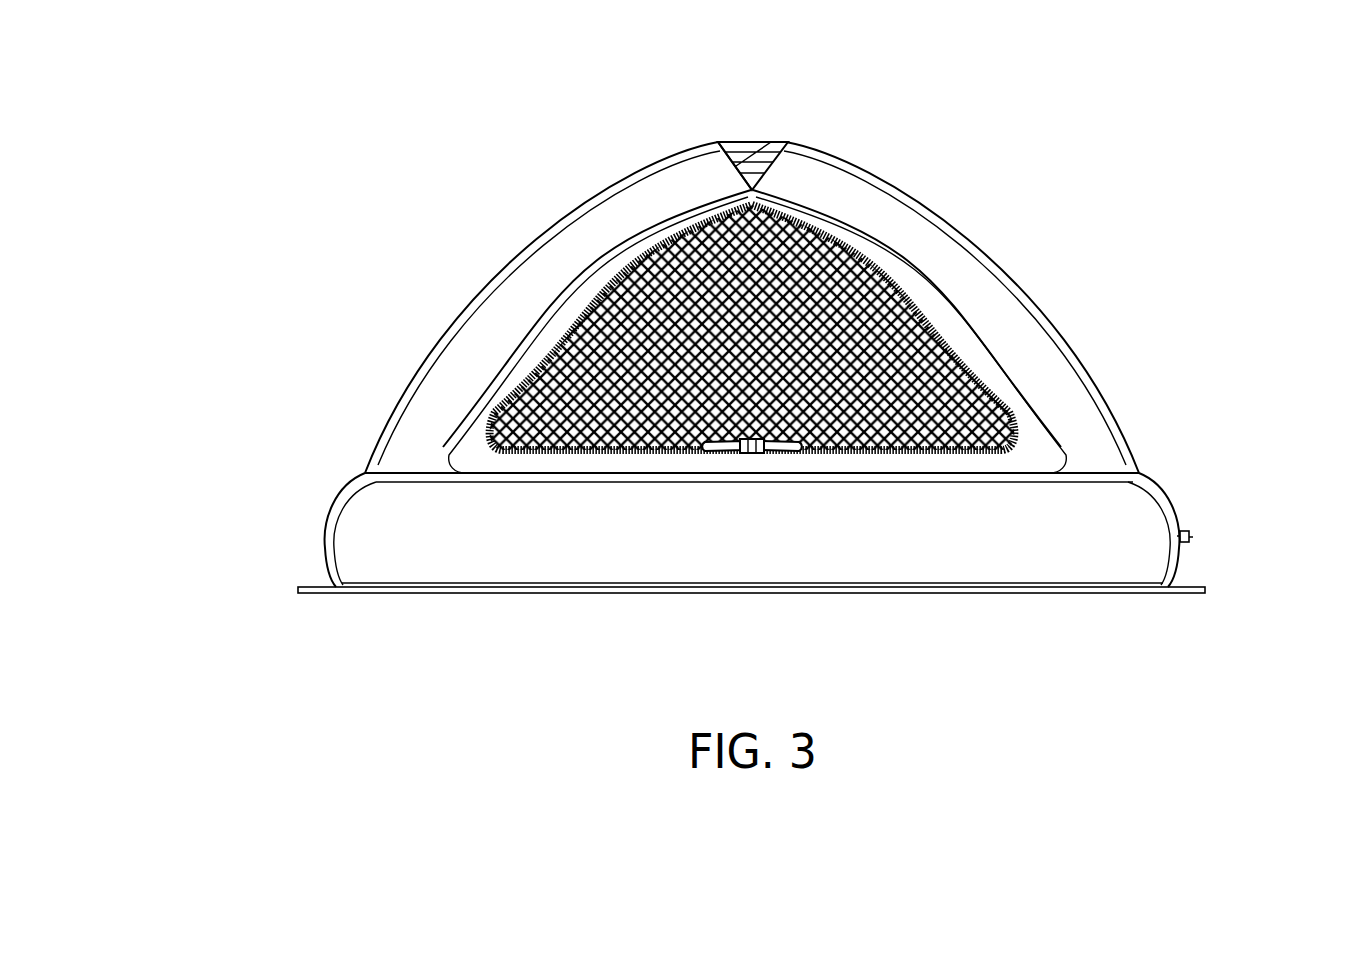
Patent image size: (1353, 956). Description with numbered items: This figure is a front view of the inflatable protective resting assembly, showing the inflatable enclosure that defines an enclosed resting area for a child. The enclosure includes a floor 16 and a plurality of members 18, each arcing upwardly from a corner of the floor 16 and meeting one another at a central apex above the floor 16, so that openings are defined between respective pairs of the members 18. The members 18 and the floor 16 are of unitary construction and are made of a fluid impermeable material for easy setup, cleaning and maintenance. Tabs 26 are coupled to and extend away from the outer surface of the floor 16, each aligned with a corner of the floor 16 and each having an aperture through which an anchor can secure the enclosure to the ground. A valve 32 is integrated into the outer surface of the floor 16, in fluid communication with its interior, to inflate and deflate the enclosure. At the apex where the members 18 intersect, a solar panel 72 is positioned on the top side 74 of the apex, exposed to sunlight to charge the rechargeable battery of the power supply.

The floor 16 is at (990, 473).
The members 18 is at (601, 230).
The tabs 26 is at (313, 594).
The valve 32 is at (1193, 537).
The solar panel 72 is at (750, 153).
The top side 74 is at (738, 172).